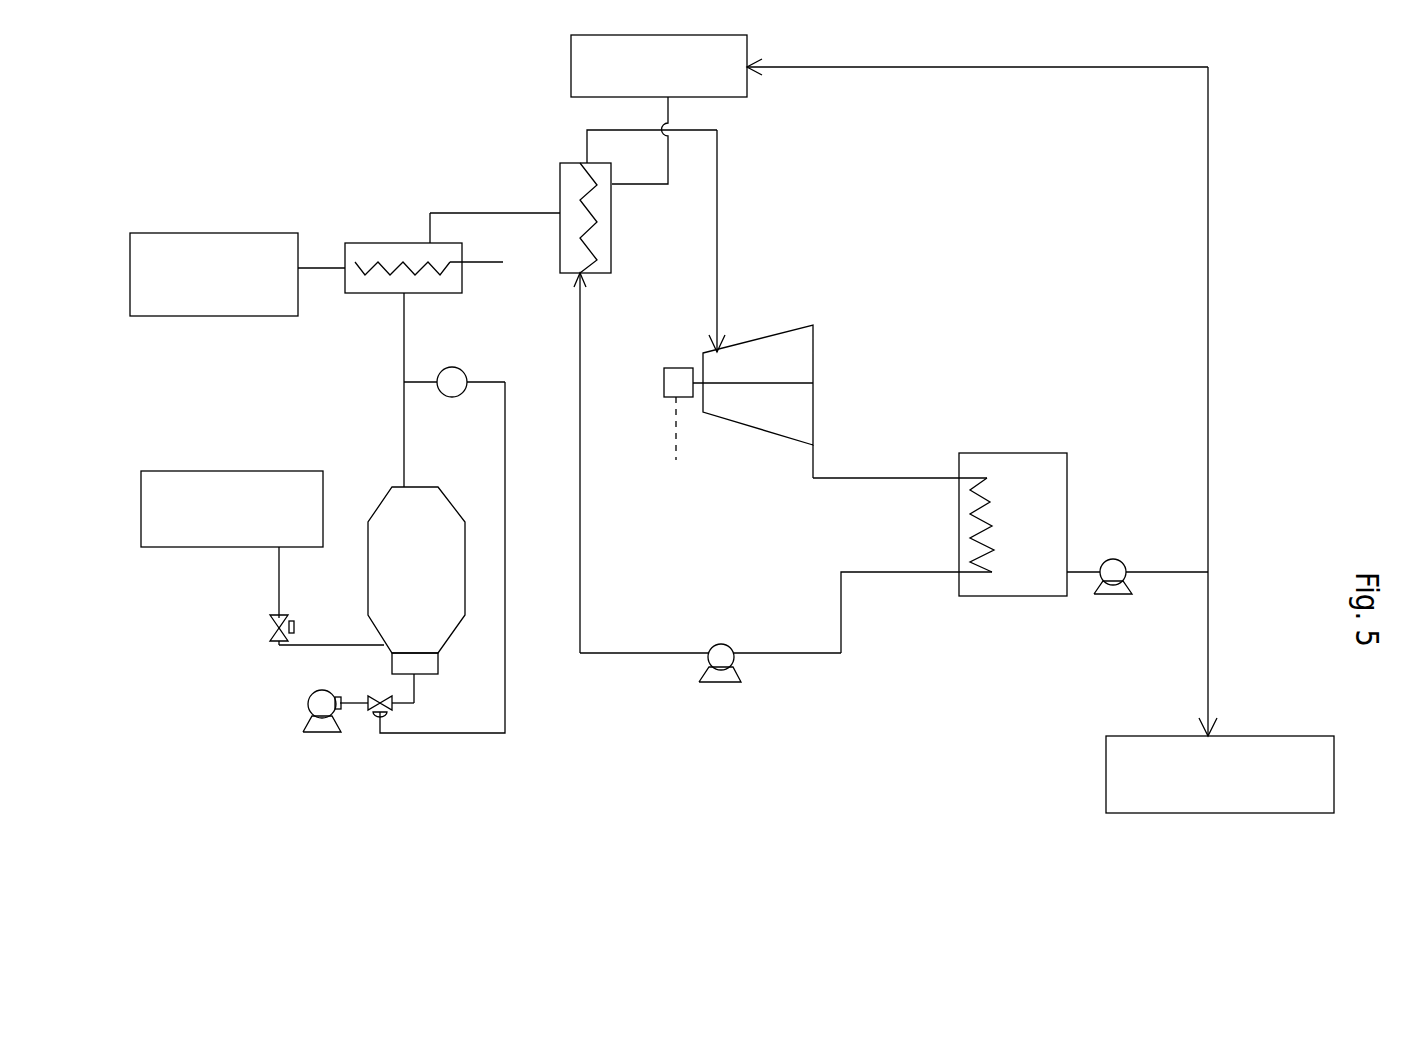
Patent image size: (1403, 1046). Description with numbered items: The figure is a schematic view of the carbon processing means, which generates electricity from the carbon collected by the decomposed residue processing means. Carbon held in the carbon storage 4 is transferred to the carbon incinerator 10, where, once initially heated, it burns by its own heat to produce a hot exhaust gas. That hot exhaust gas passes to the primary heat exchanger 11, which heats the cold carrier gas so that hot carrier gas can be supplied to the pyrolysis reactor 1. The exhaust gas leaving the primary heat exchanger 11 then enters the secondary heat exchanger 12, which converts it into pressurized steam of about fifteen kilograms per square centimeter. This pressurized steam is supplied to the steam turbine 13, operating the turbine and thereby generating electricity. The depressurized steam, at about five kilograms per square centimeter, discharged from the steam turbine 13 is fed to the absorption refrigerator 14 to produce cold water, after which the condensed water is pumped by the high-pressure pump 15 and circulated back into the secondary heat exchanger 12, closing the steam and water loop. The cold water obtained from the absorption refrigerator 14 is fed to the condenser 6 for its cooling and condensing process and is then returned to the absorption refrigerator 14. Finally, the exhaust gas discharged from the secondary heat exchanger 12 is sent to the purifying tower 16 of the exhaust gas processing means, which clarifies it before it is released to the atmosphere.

The pyrolysis reactor 1 is at (192, 316).
The carbon storage 4 is at (196, 547).
The condenser 6 is at (1106, 762).
The carbon incinerator 10 is at (438, 487).
The primary heat exchanger 11 is at (462, 293).
The secondary heat exchanger 12 is at (612, 237).
The steam turbine 13 is at (772, 434).
The absorption refrigerator 14 is at (1005, 596).
The high-pressure pump 15 is at (720, 648).
The purifying tower 16 is at (571, 67).